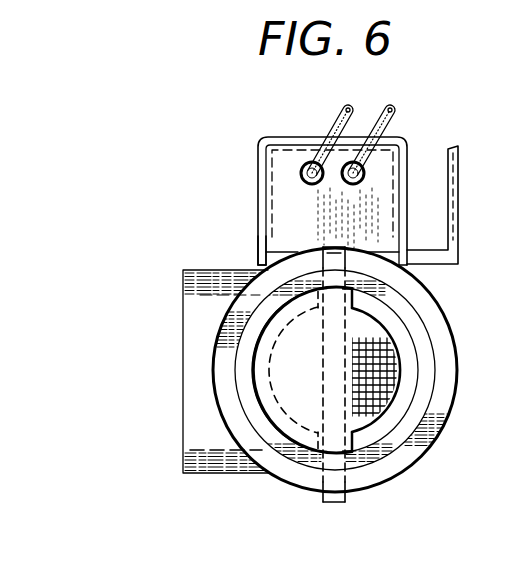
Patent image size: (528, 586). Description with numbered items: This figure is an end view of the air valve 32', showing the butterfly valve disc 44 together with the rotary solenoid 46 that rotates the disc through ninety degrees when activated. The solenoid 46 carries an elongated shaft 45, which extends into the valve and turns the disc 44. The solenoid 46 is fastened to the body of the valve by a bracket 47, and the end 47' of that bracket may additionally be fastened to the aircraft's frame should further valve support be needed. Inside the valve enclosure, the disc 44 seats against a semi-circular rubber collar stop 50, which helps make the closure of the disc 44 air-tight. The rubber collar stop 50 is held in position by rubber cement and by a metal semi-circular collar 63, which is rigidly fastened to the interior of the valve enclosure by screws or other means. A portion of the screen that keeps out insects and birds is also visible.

The motor housing 32' is at (320, 388).
The disc 44 is at (254, 336).
The elongated shaft 45 is at (323, 393).
The rotary solenoid 46 is at (295, 138).
The bracket 47 is at (232, 231).
The end of bracket 47' is at (435, 167).
The rubber collar stop 50 is at (257, 400).
The metal semi-circular collar 63 is at (395, 433).